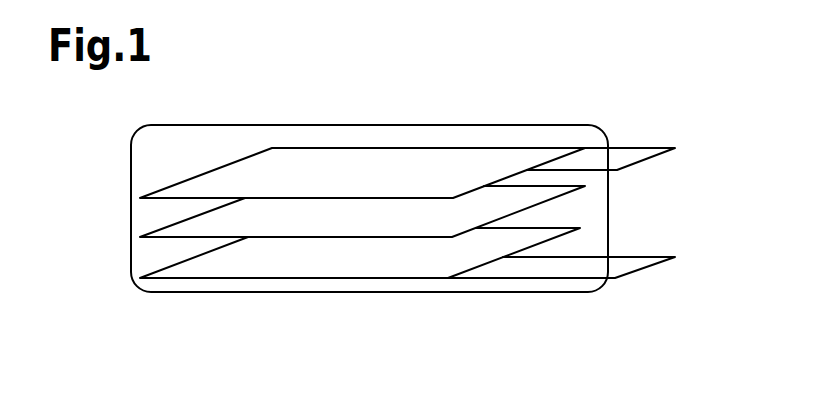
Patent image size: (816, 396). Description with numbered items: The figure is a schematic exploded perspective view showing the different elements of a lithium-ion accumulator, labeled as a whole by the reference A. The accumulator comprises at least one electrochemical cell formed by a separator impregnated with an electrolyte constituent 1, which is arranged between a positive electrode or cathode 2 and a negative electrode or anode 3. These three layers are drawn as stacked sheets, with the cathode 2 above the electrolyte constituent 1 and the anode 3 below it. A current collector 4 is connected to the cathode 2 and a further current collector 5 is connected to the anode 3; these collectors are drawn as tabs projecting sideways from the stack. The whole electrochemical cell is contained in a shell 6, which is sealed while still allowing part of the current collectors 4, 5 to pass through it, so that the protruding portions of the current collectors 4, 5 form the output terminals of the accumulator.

The laminated body / assembly A is at (516, 98).
The electrolyte constituent 1 is at (553, 200).
The positive electrode or cathode 2 is at (380, 170).
The negative electrode or anode 3 is at (293, 255).
The current collector 4 is at (624, 156).
The current collector 5 is at (630, 267).
The shell 6 is at (388, 292).